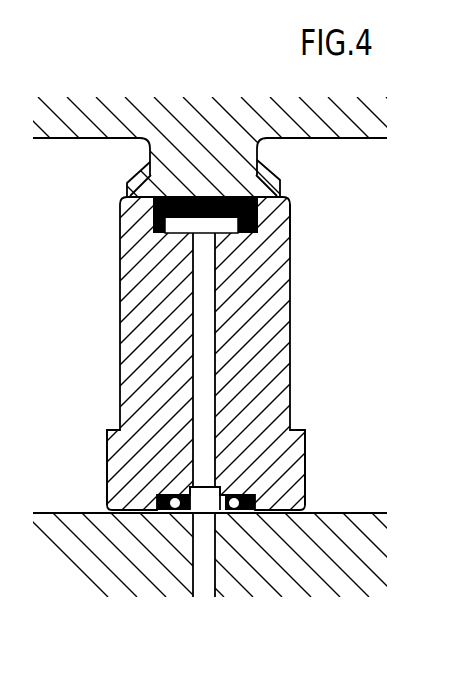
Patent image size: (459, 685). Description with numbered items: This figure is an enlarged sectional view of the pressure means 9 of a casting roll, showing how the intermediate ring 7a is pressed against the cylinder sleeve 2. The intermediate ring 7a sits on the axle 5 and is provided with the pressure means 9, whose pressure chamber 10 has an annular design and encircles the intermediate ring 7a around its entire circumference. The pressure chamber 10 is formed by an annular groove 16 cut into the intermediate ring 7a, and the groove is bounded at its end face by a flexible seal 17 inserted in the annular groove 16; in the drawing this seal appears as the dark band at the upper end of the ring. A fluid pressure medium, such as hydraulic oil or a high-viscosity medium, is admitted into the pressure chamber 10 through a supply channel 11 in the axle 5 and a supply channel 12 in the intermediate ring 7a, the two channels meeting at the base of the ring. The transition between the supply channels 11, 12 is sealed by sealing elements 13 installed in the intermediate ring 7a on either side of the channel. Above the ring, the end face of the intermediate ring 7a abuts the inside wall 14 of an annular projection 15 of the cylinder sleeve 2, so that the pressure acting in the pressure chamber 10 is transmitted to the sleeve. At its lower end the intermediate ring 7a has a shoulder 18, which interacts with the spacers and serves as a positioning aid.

The cylinder sleeve 2 is at (234, 125).
The annular projection 15 is at (213, 173).
The inside wall 14 is at (143, 163).
The flexible seal 17 is at (290, 205).
The pressure chamber 10 is at (290, 220).
The pressure means 9 is at (229, 333).
The annular groove 16 is at (173, 243).
The intermediate ring 7a is at (153, 322).
The supply channel 12 is at (205, 368).
The shoulder 18 is at (107, 428).
The sealing elements 13 is at (253, 493).
The axle 5 is at (113, 563).
The supply channel 11 is at (207, 551).